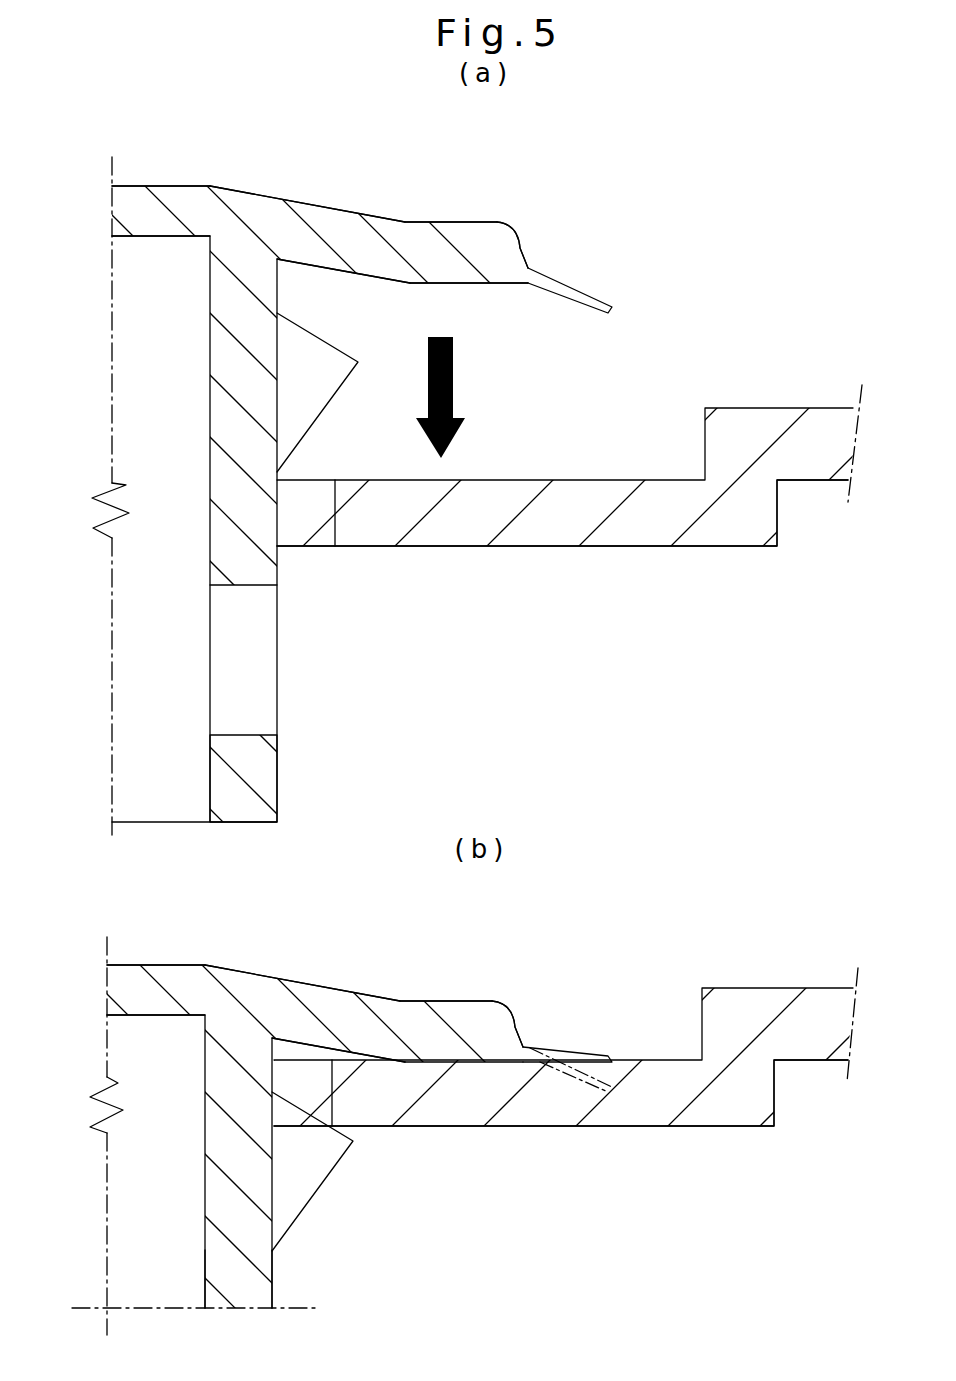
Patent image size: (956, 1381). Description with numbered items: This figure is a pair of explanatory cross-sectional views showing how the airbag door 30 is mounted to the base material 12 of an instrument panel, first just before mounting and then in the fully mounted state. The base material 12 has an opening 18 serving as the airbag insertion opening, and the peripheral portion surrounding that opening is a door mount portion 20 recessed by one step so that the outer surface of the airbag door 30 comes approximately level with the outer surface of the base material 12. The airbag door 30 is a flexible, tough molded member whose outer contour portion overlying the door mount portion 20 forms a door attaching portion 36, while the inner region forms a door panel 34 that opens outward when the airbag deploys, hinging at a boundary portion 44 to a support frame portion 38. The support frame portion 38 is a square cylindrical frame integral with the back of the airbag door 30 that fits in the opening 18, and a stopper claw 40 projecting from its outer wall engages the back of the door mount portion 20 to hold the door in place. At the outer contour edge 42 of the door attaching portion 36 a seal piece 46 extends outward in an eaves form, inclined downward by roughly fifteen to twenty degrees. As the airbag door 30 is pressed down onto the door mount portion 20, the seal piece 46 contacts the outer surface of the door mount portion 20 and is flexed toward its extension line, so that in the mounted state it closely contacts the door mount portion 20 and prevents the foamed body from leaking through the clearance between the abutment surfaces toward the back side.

The base material 12 is at (628, 556).
The opening 18 is at (337, 523).
The door mount portion 20 is at (544, 470).
The airbag door 30 is at (366, 197).
The door panel 34 is at (137, 215).
The door attaching portion 36 is at (471, 243).
The support frame portion 38 is at (258, 772).
The stopper claw 40 is at (303, 363).
The outer contour edge 42 is at (525, 250).
The boundary portion 44 is at (210, 212).
The seal piece 46 is at (580, 297).